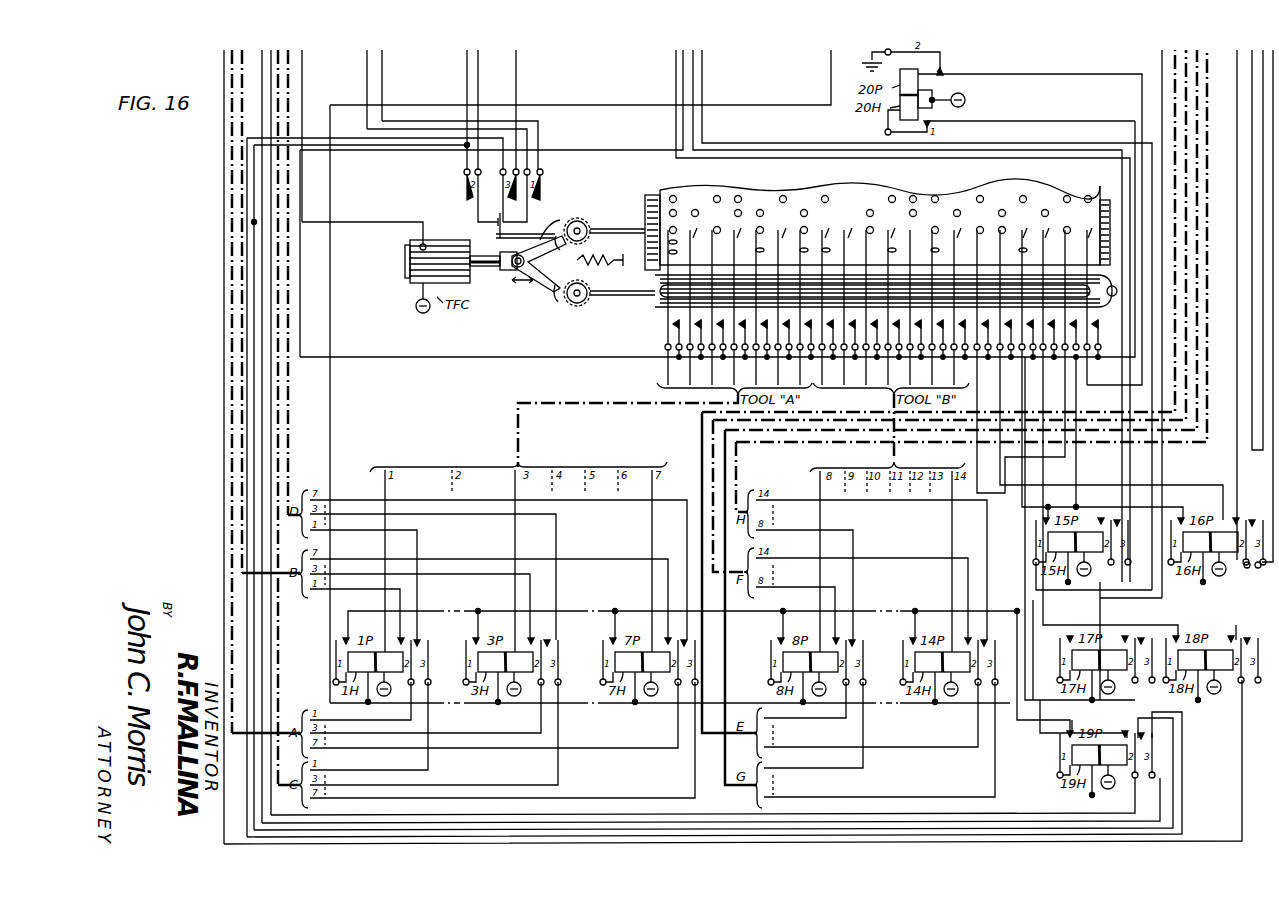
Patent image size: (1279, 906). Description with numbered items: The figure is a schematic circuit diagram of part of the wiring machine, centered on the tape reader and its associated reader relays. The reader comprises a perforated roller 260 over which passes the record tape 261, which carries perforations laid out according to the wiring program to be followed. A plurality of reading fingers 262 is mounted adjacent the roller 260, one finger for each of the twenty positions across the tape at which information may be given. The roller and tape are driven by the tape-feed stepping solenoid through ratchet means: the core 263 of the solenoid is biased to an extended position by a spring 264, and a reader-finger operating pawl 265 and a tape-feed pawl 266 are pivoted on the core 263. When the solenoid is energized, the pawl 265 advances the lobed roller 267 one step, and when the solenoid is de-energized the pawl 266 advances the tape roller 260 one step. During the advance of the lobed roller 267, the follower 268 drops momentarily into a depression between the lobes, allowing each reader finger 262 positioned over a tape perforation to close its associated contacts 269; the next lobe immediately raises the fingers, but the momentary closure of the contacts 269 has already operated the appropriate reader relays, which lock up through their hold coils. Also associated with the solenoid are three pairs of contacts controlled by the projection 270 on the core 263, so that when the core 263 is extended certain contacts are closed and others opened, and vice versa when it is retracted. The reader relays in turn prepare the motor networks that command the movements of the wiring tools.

The perforated roller 260 is at (645, 205).
The record tape 261 is at (882, 195).
The reading fingers 262 is at (1085, 230).
The core 263 is at (489, 272).
The spring 264 is at (596, 258).
The reader-finger operating pawl 265 is at (540, 283).
The tape-feed pawl 266 is at (566, 212).
The lobed roller 267 is at (612, 305).
The follower 268 is at (656, 312).
The contacts 269 is at (660, 320).
The projection 270 is at (498, 238).